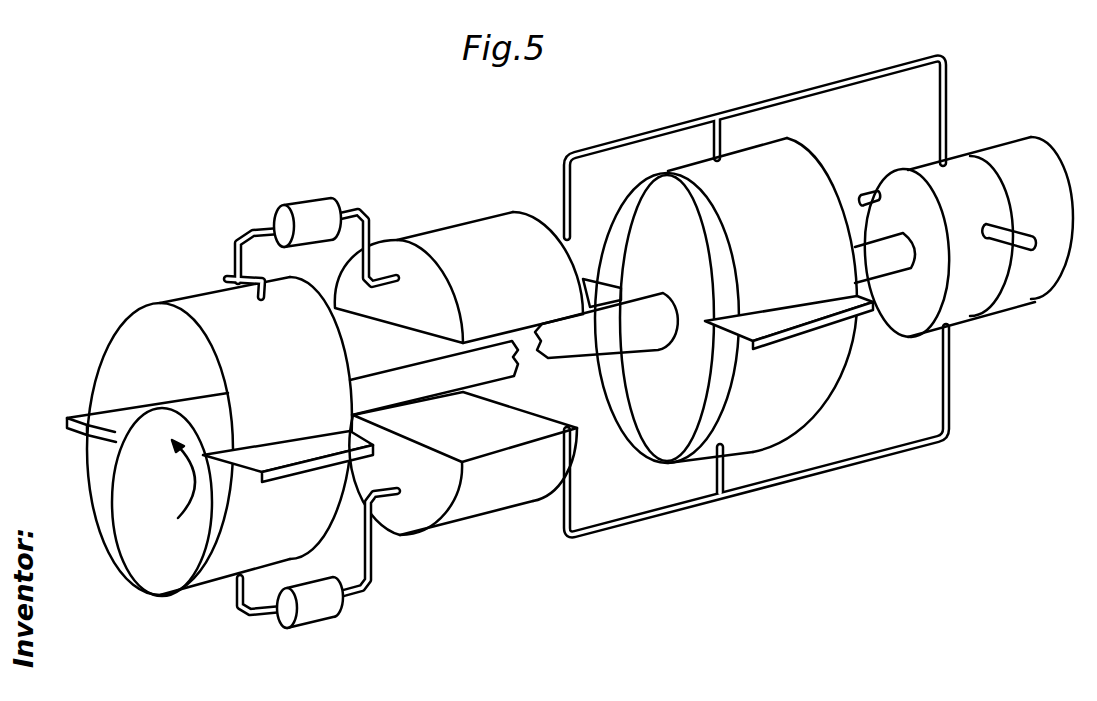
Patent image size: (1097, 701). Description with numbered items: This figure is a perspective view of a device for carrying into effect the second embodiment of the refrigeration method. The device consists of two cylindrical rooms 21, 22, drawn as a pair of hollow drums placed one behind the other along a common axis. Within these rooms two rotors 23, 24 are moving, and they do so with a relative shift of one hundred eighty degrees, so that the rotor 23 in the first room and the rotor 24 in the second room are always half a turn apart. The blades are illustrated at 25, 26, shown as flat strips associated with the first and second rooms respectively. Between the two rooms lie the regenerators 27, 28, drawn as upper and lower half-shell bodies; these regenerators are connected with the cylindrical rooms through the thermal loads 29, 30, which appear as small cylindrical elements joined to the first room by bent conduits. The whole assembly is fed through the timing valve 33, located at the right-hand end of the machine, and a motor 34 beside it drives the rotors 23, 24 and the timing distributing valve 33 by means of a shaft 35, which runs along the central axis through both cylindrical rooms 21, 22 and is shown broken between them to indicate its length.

The cylindrical room 21 is at (213, 296).
The cylindrical room 22 is at (810, 192).
The rotor 23 is at (128, 527).
The rotor 24 is at (640, 203).
The blade 25 is at (90, 432).
The blade 26 is at (828, 325).
The regenerator 27 is at (503, 235).
The regenerator 28 is at (487, 503).
The thermal load 29 is at (295, 208).
The thermal load 30 is at (302, 612).
The timing valve 33 is at (955, 177).
The motor 34 is at (1037, 172).
The shaft 35 is at (553, 362).